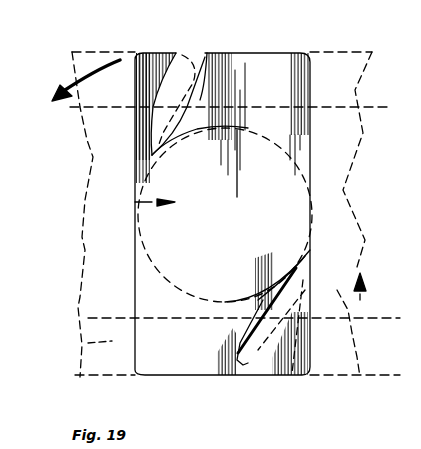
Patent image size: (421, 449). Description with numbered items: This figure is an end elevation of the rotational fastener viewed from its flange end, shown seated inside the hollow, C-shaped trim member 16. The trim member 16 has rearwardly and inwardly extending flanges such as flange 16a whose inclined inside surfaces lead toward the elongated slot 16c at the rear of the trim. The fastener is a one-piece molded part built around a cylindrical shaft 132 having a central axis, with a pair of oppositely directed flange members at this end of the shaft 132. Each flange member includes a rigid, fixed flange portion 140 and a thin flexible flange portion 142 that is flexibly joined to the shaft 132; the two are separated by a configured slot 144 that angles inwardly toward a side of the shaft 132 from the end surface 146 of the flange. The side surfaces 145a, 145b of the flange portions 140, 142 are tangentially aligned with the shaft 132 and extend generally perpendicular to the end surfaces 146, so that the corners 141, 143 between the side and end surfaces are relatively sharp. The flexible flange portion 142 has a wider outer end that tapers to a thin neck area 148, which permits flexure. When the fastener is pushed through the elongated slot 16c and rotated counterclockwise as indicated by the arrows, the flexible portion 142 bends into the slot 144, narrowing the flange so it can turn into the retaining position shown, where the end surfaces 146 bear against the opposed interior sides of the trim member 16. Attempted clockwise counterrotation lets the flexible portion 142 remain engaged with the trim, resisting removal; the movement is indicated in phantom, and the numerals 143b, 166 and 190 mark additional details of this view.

The trim member 16 is at (340, 61).
The flange 16a is at (72, 68).
The elongated slot 16c is at (100, 94).
The cylindrical shaft 132 is at (135, 202).
The fixed flange portion 140 is at (212, 358).
The corner 141 is at (308, 58).
The flexible flange portion 142 is at (157, 25).
The corner 143 is at (137, 53).
The cutting edge portion 143b is at (328, 297).
The configured slot 144 is at (203, 52).
The side surface 145a is at (310, 115).
The side surface 145b is at (135, 112).
The end surface 146 is at (157, 53).
The thin neck area 148 is at (137, 152).
The slot 166 is at (82, 349).
The cutter body 190 is at (263, 62).